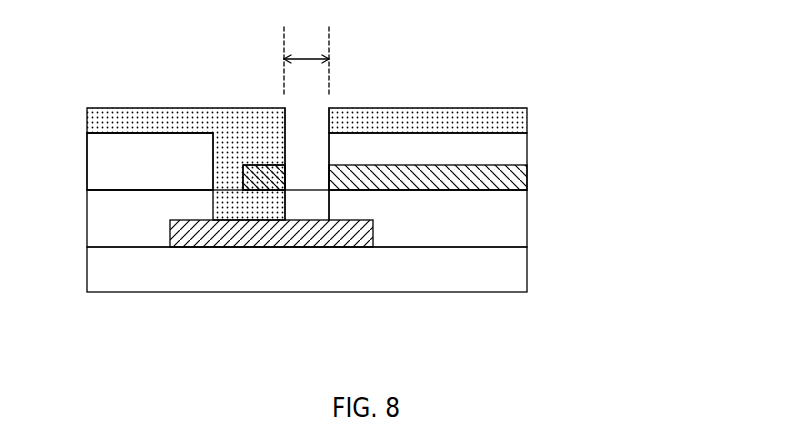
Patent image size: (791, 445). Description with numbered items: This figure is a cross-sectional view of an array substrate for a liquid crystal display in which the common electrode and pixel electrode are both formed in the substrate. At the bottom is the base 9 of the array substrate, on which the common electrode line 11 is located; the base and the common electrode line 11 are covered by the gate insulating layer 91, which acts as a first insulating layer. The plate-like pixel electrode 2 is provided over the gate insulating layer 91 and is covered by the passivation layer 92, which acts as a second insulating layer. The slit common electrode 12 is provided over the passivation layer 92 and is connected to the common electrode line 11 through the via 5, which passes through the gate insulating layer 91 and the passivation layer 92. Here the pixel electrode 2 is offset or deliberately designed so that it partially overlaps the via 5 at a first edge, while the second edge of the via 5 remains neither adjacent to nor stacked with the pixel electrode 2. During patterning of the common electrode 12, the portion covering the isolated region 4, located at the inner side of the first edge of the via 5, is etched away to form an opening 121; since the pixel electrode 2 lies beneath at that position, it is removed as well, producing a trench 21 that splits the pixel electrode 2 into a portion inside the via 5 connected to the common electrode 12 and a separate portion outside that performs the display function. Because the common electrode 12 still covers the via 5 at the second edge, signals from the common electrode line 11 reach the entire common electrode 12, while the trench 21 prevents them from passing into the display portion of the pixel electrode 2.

The base 9 is at (498, 264).
The gate insulating layer 91 is at (498, 229).
The passivation layer 92 is at (498, 145).
The via 5 is at (212, 157).
The common electrode line 11 is at (227, 225).
The pixel electrode 2 is at (434, 185).
The trench 21 is at (312, 182).
The common electrode 12 is at (498, 111).
The opening 121 is at (313, 125).
The isolated region 4 is at (306, 59).